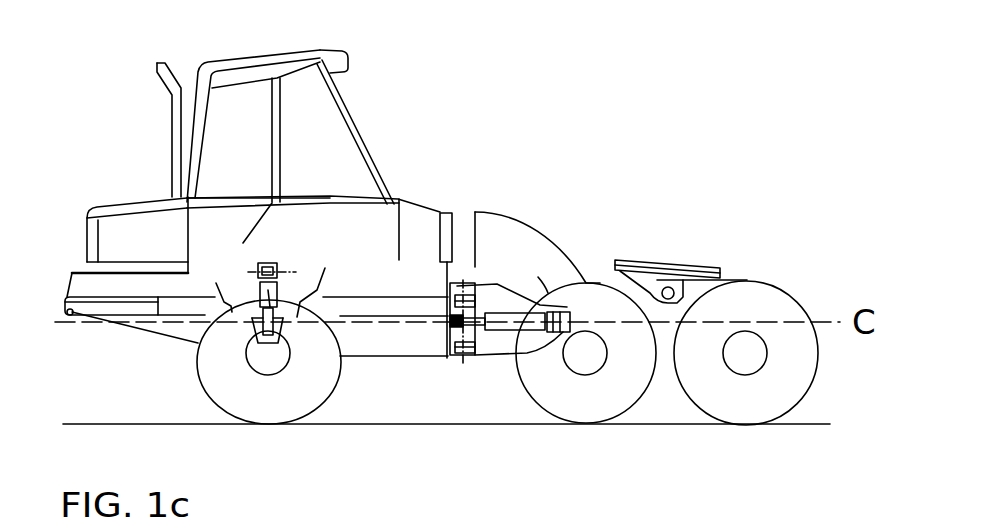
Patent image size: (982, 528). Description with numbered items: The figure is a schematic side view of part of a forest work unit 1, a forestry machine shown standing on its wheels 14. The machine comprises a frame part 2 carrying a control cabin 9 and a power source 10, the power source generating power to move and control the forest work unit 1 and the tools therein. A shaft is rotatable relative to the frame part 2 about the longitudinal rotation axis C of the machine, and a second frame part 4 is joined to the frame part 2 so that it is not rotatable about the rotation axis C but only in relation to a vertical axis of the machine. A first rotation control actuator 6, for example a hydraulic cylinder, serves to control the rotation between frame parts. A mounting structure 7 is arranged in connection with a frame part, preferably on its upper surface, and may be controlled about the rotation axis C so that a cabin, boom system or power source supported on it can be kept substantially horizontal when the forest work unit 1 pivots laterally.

The forest work unit 1 is at (647, 107).
The frame part 2 is at (350, 330).
The second frame part 4 is at (520, 333).
The first rotation control actuator 6 is at (277, 337).
The mounting structure 7 is at (643, 268).
The control cabin 9 is at (387, 140).
The power source 10 is at (155, 228).
The wheels 14 is at (603, 400).